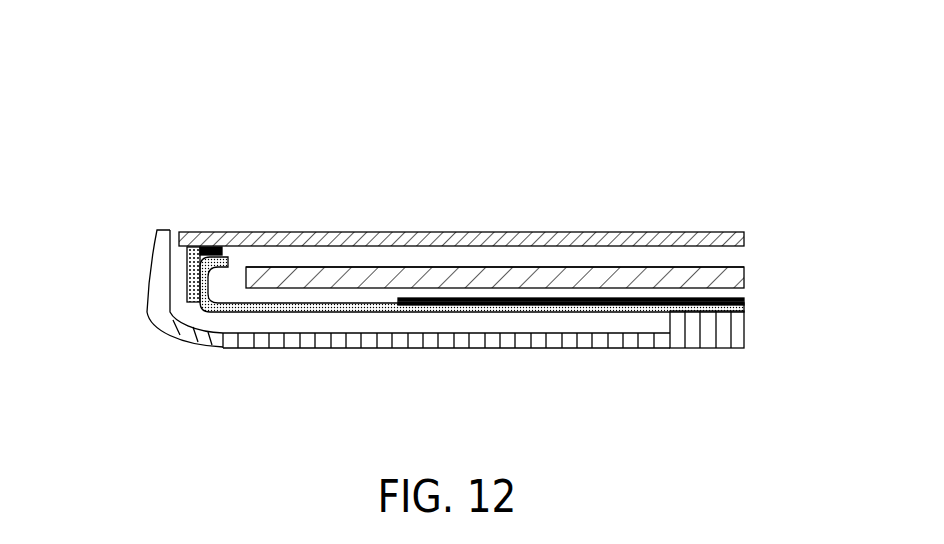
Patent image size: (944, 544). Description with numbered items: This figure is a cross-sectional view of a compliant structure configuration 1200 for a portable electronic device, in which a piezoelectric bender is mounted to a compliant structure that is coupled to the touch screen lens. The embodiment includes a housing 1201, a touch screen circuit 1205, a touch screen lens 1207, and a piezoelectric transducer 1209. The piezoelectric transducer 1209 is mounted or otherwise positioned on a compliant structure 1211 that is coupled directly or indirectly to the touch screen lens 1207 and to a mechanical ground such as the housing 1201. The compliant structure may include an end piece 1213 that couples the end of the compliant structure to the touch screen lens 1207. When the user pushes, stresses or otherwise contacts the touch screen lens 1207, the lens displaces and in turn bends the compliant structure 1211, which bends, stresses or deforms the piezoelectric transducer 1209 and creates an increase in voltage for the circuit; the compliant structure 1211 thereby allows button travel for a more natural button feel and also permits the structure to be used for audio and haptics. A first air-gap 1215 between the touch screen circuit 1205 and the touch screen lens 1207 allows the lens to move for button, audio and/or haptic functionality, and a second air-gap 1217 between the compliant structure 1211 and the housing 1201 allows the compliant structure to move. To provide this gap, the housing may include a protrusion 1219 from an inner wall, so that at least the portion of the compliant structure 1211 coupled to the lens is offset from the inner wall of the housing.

The compliant structure configuration 1200 is at (638, 67).
The housing 1201 is at (150, 287).
The touch screen circuit 1205 is at (737, 277).
The touch screen lens 1207 is at (428, 238).
The piezoelectric transducer 1209 is at (620, 306).
The compliant structure 1211 is at (263, 313).
The end piece 1213 is at (197, 256).
The first air-gap 1215 is at (521, 265).
The second air-gap 1217 is at (493, 318).
The protrusion 1219 is at (744, 328).